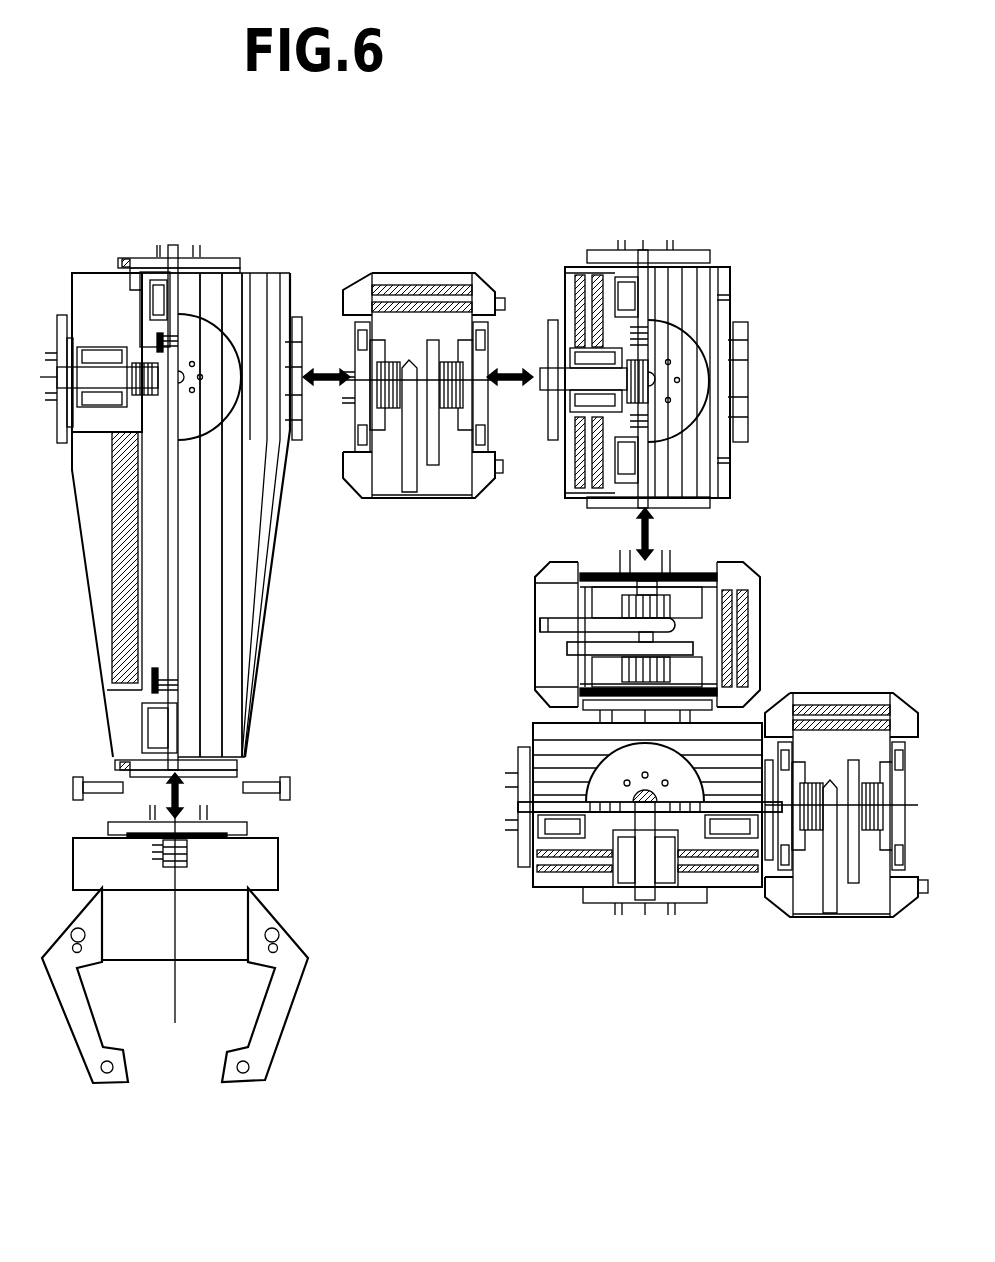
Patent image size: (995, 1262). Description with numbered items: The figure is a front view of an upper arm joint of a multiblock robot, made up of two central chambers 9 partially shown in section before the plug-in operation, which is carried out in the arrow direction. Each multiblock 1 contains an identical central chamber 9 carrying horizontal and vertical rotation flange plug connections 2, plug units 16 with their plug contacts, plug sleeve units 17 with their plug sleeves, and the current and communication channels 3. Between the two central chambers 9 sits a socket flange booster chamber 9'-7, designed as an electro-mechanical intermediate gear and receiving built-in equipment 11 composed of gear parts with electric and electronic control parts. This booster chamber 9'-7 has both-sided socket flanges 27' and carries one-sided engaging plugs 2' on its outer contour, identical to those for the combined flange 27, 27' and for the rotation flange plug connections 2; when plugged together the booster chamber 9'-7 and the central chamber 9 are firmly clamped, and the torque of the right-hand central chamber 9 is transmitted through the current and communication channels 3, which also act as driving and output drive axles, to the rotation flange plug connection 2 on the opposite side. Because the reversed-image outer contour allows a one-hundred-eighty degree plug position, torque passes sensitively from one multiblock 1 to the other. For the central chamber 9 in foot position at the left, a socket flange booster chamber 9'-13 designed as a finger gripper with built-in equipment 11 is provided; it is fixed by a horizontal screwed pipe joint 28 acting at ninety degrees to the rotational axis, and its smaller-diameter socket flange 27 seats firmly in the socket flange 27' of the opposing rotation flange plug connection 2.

The multiblock 1 is at (75, 305).
The rotation flange plug connection 2 is at (495, 657).
The engaging plug 2' is at (525, 542).
The current and communication channel 3 is at (165, 483).
The central chamber 9 is at (218, 515).
The built-in equipment 11 is at (388, 285).
The plug unit 16 is at (170, 245).
The plug sleeve unit 17 is at (748, 385).
The socket flange 27 is at (203, 878).
The socket flange 27' is at (415, 496).
The horizontal screwed pipe joint 28 is at (240, 830).
The socket flange booster chamber 9'-7 is at (635, 628).
The socket flange booster chamber 9'-13 is at (221, 931).